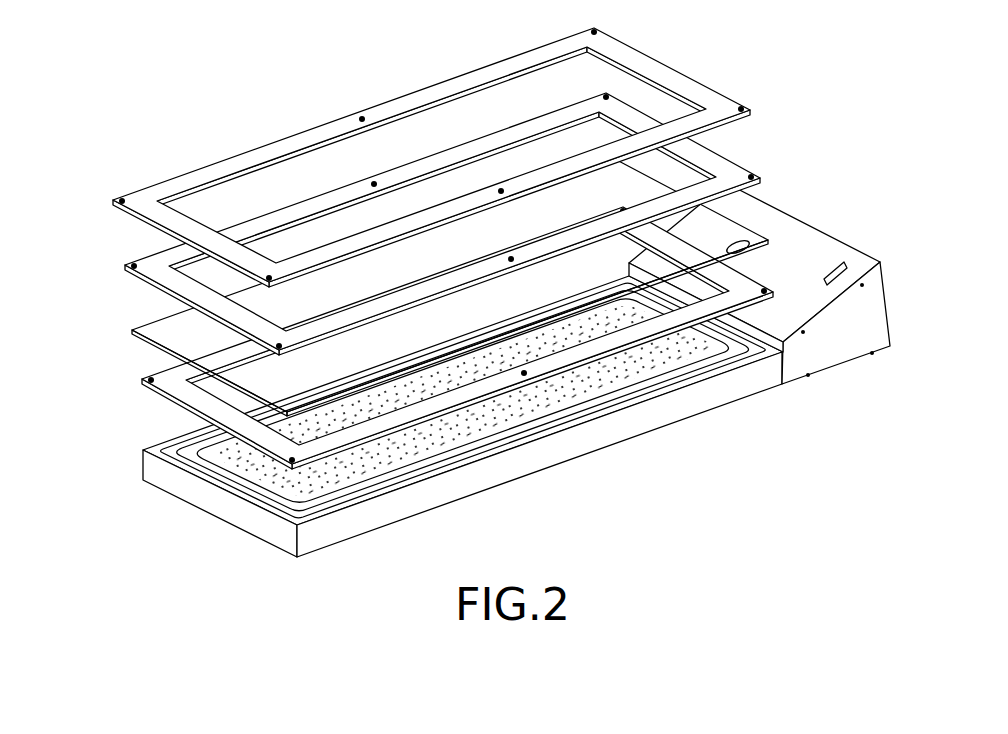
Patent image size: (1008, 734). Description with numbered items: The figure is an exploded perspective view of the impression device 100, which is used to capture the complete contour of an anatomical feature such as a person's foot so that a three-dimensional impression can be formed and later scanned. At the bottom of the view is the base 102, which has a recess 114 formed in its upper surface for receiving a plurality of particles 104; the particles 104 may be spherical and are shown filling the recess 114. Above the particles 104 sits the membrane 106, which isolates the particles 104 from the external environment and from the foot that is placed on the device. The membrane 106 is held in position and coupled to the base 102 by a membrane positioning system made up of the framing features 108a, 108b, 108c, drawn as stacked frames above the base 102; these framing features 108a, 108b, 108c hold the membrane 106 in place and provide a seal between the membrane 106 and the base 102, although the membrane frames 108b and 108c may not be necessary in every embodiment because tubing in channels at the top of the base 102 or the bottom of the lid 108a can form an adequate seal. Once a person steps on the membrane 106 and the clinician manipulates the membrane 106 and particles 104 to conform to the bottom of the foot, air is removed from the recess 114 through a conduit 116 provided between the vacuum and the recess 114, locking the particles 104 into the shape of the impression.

The impression device 100 is at (96, 92).
The base 102 is at (143, 462).
The particles 104 is at (270, 507).
The membrane 106 is at (132, 330).
The framing feature (lid) 108a is at (113, 200).
The membrane frame 108b is at (125, 265).
The membrane frame 108c is at (142, 379).
The recess 114 is at (647, 396).
The conduit 116 is at (747, 364).